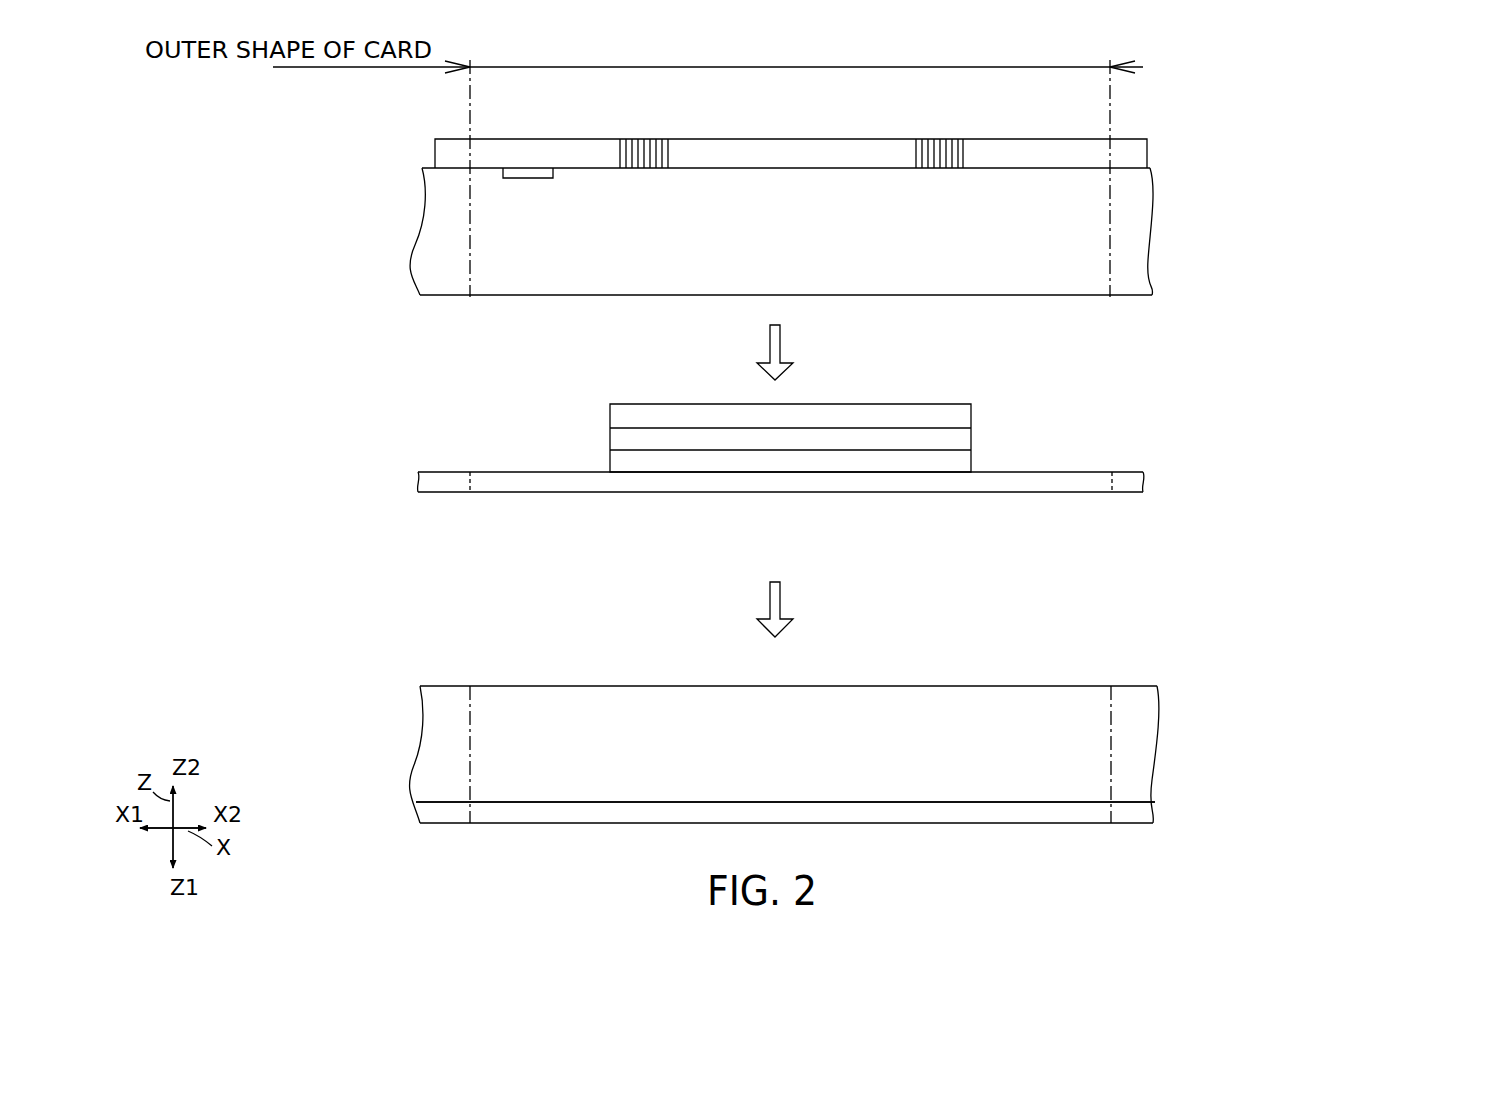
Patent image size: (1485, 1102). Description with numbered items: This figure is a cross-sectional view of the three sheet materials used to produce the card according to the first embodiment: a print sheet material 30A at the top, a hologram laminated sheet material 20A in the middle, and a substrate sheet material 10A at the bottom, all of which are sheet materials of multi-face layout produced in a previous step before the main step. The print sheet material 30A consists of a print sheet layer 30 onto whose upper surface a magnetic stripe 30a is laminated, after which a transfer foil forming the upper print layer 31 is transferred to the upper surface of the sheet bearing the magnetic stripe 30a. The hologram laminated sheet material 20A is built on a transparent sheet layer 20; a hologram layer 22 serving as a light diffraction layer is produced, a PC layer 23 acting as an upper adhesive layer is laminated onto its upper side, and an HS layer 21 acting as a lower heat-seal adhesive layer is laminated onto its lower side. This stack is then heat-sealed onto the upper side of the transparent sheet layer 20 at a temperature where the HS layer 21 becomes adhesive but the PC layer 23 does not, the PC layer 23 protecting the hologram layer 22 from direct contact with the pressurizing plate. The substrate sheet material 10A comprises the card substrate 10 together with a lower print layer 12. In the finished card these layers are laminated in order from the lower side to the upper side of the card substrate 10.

The print sheet material 30A is at (735, 191).
The upper print layer 31 is at (1085, 150).
The print sheet layer 30 is at (1088, 188).
The magnetic stripe 30a is at (524, 177).
The hologram laminated sheet material 20A is at (772, 482).
The PC layer 23 is at (971, 410).
The hologram layer 22 is at (971, 434).
The HS layer 21 is at (971, 458).
The transparent sheet layer 20 is at (1072, 483).
The substrate sheet material 10A is at (786, 736).
The card substrate 10 is at (1080, 748).
The lower print layer 12 is at (1072, 806).